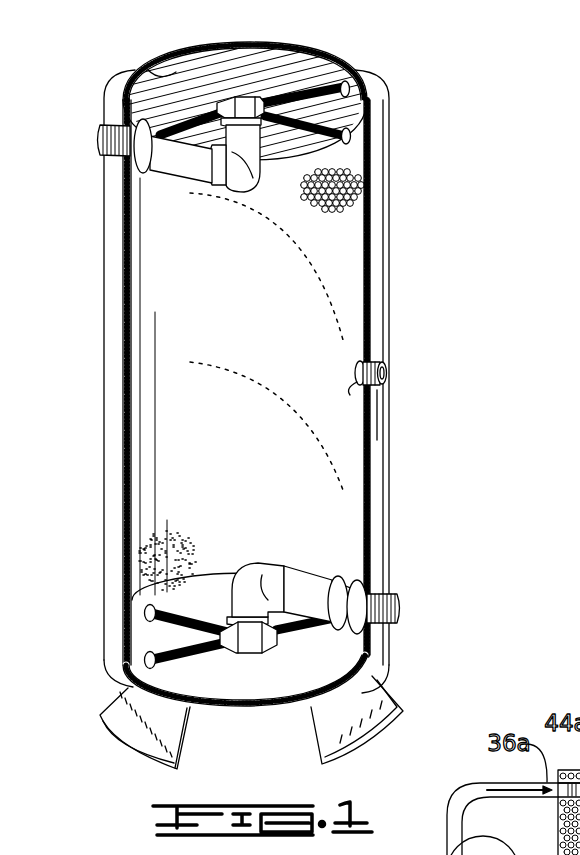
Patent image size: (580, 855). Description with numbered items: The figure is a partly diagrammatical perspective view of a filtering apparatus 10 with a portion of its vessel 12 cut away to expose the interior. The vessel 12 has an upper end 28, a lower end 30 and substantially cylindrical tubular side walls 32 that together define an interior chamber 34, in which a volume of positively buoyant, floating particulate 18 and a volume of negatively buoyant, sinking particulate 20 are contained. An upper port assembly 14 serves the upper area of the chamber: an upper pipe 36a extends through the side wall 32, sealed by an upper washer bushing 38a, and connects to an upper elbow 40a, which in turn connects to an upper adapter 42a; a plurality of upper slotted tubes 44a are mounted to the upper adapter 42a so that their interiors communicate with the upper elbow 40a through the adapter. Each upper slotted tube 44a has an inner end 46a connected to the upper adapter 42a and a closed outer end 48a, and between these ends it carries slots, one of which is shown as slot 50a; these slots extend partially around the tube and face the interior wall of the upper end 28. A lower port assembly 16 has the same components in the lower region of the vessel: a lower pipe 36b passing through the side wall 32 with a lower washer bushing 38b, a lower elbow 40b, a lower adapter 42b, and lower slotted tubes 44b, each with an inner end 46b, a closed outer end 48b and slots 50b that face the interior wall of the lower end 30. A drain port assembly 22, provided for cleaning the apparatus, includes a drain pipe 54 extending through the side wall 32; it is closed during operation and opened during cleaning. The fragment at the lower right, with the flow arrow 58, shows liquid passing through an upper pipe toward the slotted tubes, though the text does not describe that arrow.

The filtering apparatus 10 is at (480, 98).
The vessel 12 is at (383, 265).
The upper port assembly 14 is at (241, 117).
The lower port assembly 16 is at (260, 640).
The positively buoyant particulate 18 is at (343, 200).
The negatively buoyant particulate 20 is at (157, 570).
The drain port assembly 22 is at (390, 360).
The upper end 28 is at (143, 64).
The lower end 30 is at (323, 677).
The side walls 32 is at (104, 442).
The interior chamber 34 is at (277, 489).
The upper pipe 36a is at (112, 154).
The lower pipe 36b is at (390, 600).
The upper washer bushing 38a is at (123, 112).
The lower washer bushing 38b is at (353, 667).
The upper elbow 40a is at (240, 185).
The lower elbow 40b is at (256, 565).
The upper adapter 42a is at (229, 102).
The lower adapter 42b is at (257, 655).
The upper slotted tubes 44a is at (331, 108).
The lower slotted tubes 44b is at (166, 640).
The inner end 46a is at (262, 104).
The inner end 46b is at (223, 656).
The outer end 48a is at (350, 90).
The outer end 48b is at (147, 660).
The slot 50a is at (325, 74).
The slot 50b is at (124, 683).
The drain pipe 54 is at (358, 381).
The flow direction arrow 58 is at (520, 790).